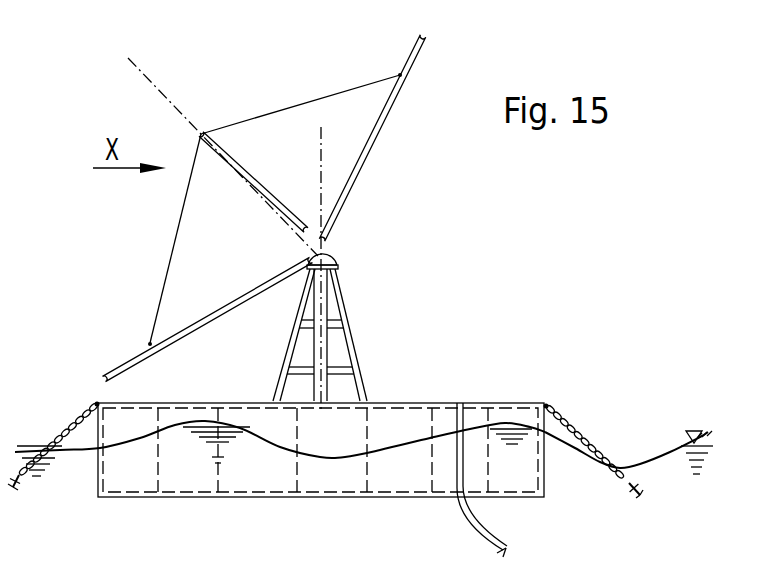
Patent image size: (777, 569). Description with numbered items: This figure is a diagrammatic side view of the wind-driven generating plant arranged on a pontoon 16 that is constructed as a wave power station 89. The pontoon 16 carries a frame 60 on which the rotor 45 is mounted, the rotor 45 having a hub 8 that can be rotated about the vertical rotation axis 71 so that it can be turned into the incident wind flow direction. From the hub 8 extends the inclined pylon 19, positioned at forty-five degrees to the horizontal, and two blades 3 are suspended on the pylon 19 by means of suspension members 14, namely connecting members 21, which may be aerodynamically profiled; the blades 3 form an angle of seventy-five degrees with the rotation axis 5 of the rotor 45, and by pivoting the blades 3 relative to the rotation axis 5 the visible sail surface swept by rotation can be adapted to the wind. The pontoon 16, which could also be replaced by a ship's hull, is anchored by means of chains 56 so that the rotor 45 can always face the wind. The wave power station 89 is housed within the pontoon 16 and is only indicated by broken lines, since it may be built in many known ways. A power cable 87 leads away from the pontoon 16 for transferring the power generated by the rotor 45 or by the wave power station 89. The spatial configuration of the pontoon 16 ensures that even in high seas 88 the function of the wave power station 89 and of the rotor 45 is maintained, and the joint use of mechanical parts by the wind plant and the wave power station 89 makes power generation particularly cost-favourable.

The blades 3 is at (391, 111).
The rotation axis 5 is at (129, 60).
The hub 8 is at (344, 241).
The sail 14 is at (236, 192).
The connecting members 21 is at (268, 112).
The pontoon 16 is at (503, 402).
The pylon 19 is at (258, 185).
The rotor 45 is at (406, 216).
The chains 56 is at (60, 440).
The frame 60 is at (347, 312).
The rotation axis 71 is at (322, 140).
The power cable 87 is at (465, 513).
The high seas 88 is at (657, 460).
The wave power station 89 is at (380, 451).